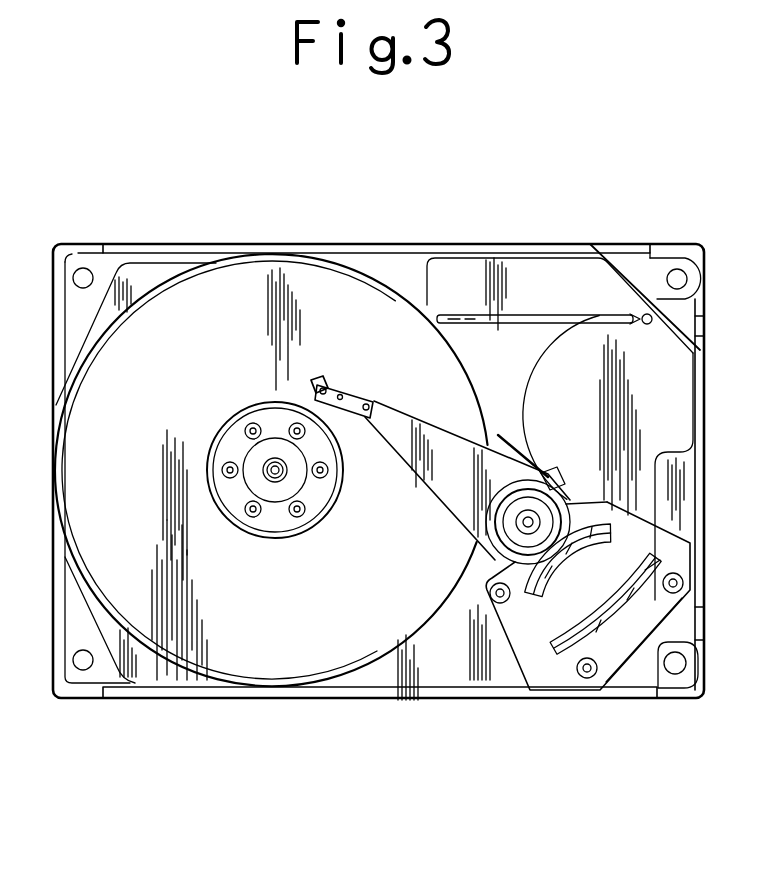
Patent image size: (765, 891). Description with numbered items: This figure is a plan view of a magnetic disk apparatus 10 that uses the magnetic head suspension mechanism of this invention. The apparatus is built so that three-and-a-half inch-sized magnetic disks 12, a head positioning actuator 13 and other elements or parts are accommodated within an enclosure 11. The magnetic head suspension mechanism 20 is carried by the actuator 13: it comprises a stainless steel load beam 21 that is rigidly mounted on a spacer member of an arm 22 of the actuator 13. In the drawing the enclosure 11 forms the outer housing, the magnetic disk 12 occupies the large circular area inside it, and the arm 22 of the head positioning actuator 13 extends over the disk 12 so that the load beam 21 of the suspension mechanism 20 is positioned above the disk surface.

The magnetic disk apparatus 10 is at (522, 234).
The enclosure 11 is at (410, 243).
The magnetic disk 12 is at (242, 667).
The head positioning actuator 13 is at (506, 665).
The magnetic head suspension mechanism 20 is at (334, 376).
The load beam 21 is at (355, 390).
The arm 22 is at (454, 502).